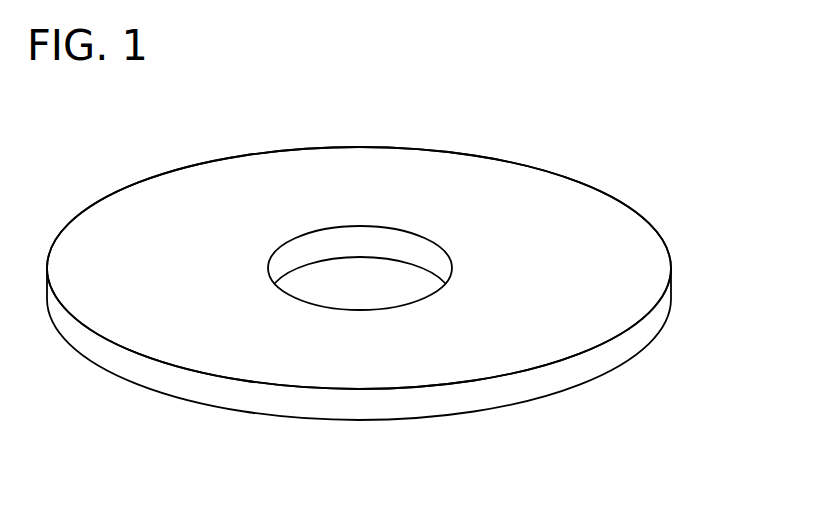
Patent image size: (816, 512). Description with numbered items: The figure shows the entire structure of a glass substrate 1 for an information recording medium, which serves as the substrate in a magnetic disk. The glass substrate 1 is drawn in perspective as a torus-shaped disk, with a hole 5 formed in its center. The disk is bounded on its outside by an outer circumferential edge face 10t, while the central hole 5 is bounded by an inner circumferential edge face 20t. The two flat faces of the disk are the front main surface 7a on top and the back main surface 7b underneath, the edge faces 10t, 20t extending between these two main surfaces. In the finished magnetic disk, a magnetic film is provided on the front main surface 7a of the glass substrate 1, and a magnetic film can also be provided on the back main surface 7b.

The glass substrate 1 is at (590, 165).
The front main surface 7a is at (622, 222).
The back main surface 7b is at (570, 388).
The outer circumferential edge face 10t is at (670, 288).
The inner circumferential edge face 20t is at (297, 258).
The hole 5 is at (357, 277).